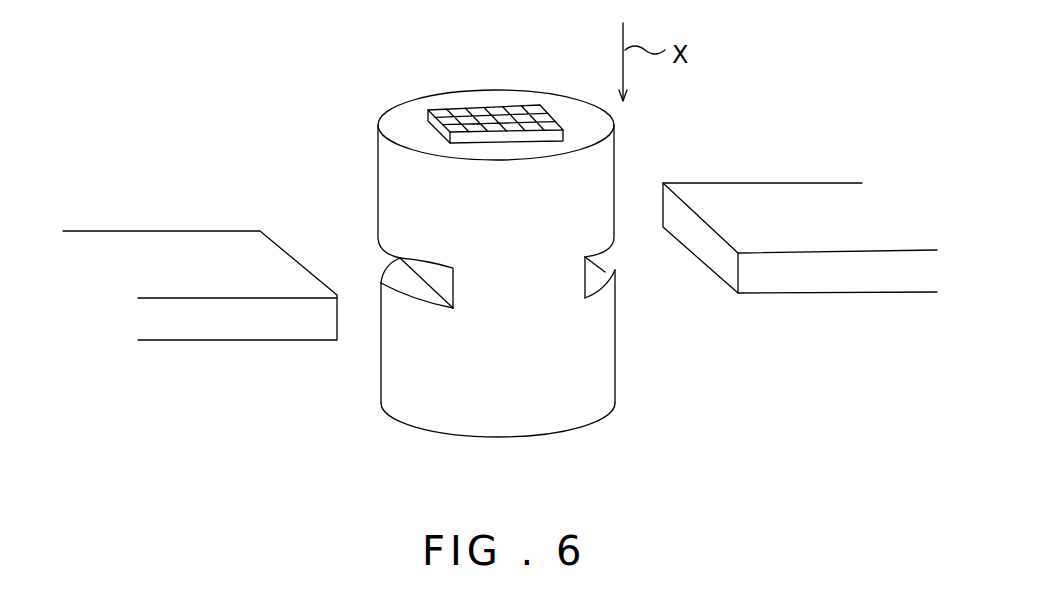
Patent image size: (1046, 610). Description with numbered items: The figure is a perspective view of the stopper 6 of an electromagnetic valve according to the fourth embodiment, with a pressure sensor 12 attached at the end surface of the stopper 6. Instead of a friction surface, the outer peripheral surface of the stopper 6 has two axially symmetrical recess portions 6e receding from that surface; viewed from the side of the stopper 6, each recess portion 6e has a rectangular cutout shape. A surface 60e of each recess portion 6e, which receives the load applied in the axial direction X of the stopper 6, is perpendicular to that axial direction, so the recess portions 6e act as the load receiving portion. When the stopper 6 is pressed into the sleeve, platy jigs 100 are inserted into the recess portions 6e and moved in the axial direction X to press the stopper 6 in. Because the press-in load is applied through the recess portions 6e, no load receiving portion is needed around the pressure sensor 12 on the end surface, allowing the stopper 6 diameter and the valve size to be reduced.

The stopper 6 is at (390, 163).
The pressure sensor 12 is at (460, 110).
The recess portion 6e is at (383, 255).
The surface of recess portion 60e is at (407, 285).
The platy jig 100 is at (225, 283).